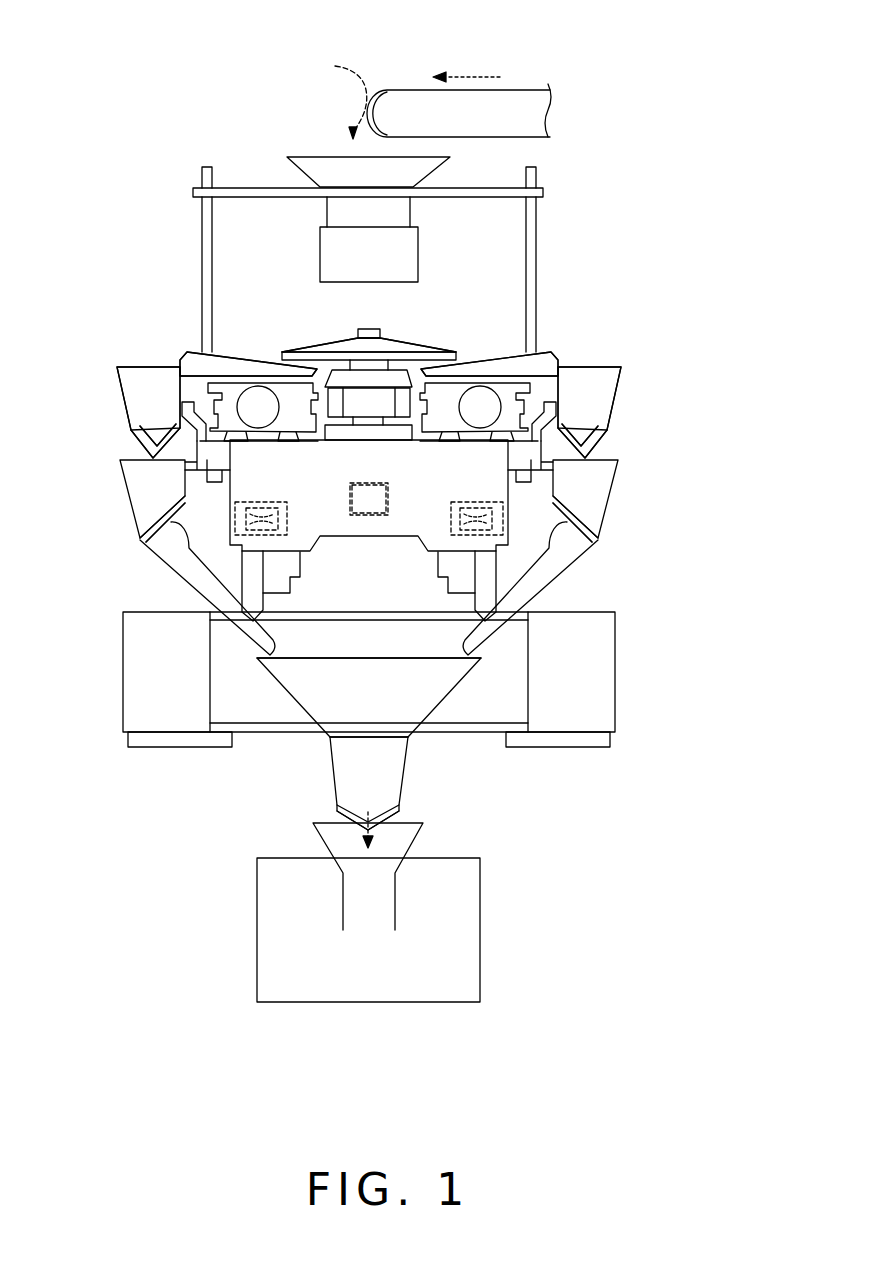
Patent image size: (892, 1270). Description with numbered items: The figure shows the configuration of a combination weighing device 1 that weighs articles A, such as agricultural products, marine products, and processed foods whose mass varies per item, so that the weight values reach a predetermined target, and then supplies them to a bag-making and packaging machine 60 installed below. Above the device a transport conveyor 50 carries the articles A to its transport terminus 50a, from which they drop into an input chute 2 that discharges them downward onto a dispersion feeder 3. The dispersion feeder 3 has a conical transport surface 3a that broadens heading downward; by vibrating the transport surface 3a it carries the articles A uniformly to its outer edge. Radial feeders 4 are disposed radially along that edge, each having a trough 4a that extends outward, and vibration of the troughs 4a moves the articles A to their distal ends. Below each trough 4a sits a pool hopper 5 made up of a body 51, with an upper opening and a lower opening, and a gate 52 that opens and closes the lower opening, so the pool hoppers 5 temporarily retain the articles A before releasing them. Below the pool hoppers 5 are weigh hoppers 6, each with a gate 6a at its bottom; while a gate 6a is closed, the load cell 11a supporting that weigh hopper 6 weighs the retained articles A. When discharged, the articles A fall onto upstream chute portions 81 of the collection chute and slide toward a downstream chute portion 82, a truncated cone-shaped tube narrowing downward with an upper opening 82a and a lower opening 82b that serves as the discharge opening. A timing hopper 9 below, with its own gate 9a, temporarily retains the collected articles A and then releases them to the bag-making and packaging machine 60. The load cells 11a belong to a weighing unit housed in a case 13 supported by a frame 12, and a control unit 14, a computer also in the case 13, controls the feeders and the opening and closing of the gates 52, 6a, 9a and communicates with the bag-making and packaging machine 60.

The combination weighing device 1 is at (150, 78).
The input chute 2 is at (320, 164).
The dispersion feeder 3 is at (412, 348).
The transport surface 3a is at (310, 345).
The radial feeder 4 is at (190, 362).
The trough 4a is at (220, 368).
The pool hopper 5 is at (57, 373).
The body 51 is at (120, 380).
The gate 52 is at (128, 445).
The weigh hopper 6 is at (135, 492).
The gate 6a is at (145, 517).
The upstream chute portion 81 is at (180, 572).
The downstream chute portion 82 is at (428, 692).
The upper opening 82a is at (341, 658).
The lower opening 82b is at (358, 740).
The timing hopper 9 is at (390, 781).
The gate 9a is at (363, 823).
The load cell 11a is at (283, 500).
The frame 12 is at (603, 657).
The case 13 is at (383, 518).
The control unit 14 is at (362, 518).
The transport conveyor 50 is at (517, 102).
The transport terminus 50a is at (386, 108).
The bag-making and packaging machine 60 is at (467, 918).
The articles A is at (345, 92).